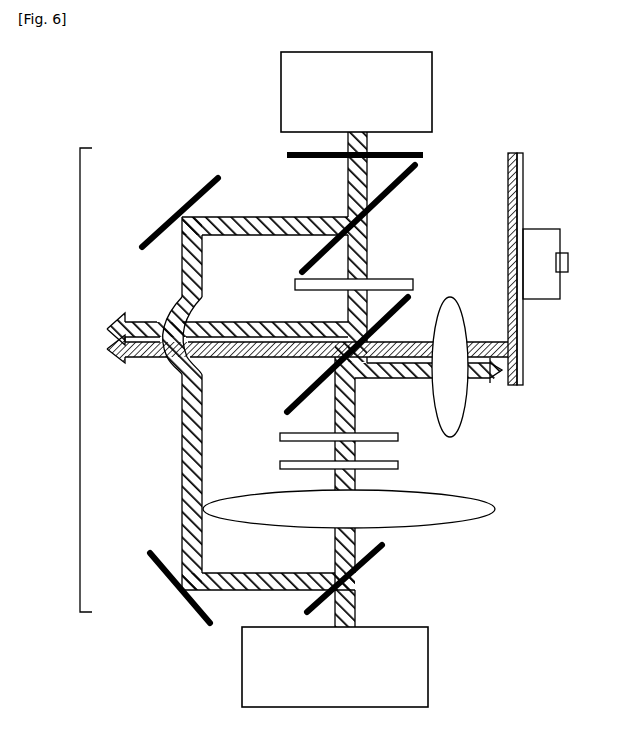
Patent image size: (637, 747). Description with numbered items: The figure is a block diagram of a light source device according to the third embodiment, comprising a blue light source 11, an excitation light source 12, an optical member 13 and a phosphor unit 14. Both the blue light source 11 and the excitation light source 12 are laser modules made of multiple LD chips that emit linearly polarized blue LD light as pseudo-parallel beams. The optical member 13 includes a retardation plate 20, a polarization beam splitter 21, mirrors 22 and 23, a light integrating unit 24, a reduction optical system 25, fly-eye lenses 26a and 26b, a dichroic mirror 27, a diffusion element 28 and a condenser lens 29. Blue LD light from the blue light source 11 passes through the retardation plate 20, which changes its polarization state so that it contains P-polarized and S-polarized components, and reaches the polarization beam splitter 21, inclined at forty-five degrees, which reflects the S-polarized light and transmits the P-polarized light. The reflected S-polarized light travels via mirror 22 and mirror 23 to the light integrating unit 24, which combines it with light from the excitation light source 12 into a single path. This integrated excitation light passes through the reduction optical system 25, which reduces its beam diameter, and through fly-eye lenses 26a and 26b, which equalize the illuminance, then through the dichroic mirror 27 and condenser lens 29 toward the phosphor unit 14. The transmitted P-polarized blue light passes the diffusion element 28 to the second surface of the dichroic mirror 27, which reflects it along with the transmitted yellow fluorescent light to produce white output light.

The blue light source 11 is at (432, 93).
The excitation light source 12 is at (428, 630).
The optical member 13 is at (80, 382).
The phosphor unit 14 is at (527, 229).
The retardation plate 20 is at (423, 153).
The polarization beam splitter 21 is at (416, 167).
The mirror 22 is at (218, 178).
The mirror 23 is at (150, 553).
The light integrating unit 24 is at (382, 545).
The reduction optical system 25 is at (495, 509).
The fly-eye lens 26a is at (280, 463).
The fly-eye lens 26b is at (398, 437).
The dichroic mirror 27 is at (287, 412).
The diffusion element 28 is at (388, 279).
The condenser lens 29 is at (450, 298).